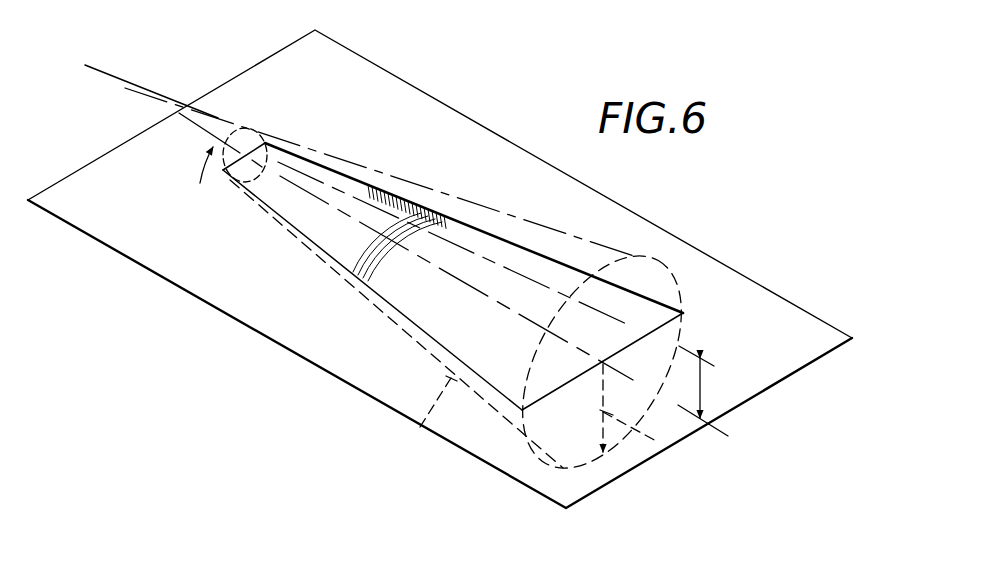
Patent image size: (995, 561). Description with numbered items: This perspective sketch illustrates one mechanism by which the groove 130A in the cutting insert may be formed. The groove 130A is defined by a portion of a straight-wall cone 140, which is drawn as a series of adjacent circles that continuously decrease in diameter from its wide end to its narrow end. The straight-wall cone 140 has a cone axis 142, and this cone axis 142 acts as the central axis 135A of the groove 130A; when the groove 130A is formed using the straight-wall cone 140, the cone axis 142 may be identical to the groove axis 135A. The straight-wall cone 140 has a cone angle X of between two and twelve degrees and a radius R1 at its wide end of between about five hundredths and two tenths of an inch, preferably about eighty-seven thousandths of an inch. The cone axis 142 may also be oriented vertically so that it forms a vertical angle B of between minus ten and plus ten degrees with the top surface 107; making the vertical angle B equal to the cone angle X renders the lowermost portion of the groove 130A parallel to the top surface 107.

The top surface 107 is at (403, 102).
The groove 130A is at (412, 297).
The central axis of the groove 135A is at (131, 88).
The straight-wall cone 140 is at (421, 425).
The cone axis 142 is at (100, 77).
The cone angle X is at (211, 110).
The vertical angle B is at (703, 387).
The radius at the wide end of the cone R1 is at (645, 449).